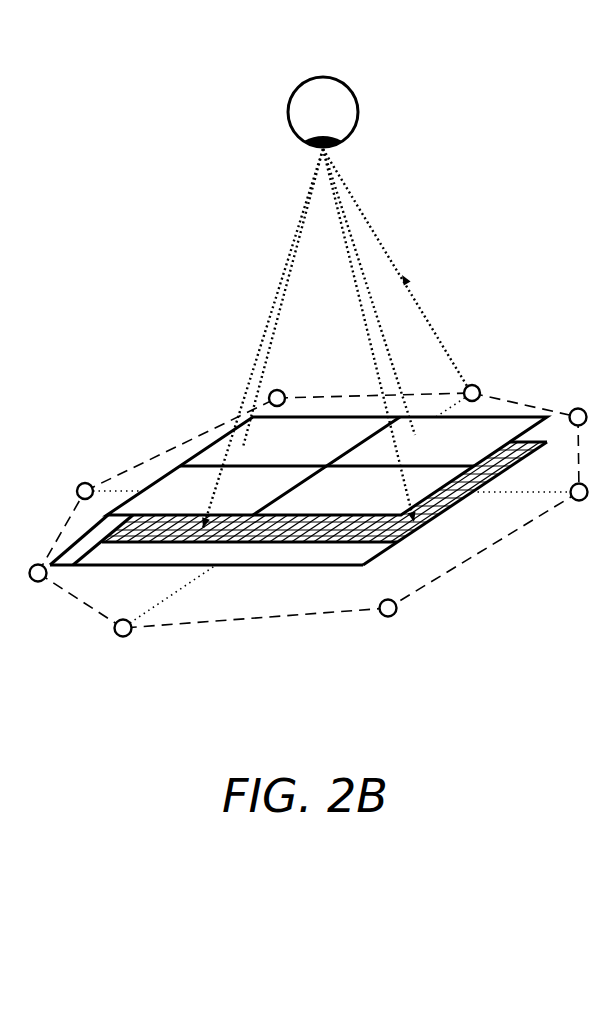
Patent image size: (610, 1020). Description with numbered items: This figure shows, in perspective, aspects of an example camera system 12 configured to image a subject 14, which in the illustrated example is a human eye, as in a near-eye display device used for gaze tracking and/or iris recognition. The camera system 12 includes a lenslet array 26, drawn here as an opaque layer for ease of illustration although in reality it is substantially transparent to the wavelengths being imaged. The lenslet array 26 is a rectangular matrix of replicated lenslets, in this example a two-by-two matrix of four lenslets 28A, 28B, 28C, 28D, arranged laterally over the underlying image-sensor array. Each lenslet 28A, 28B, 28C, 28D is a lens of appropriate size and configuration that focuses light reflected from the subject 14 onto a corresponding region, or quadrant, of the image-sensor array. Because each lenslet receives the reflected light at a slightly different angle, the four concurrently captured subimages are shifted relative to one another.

The camera system 12 is at (162, 293).
The subject 14 is at (358, 112).
The lenslet array 26 is at (205, 448).
The lenslet 28A is at (310, 455).
The lenslet 28B is at (458, 455).
The lenslet 28C is at (384, 502).
The lenslet 28D is at (258, 502).